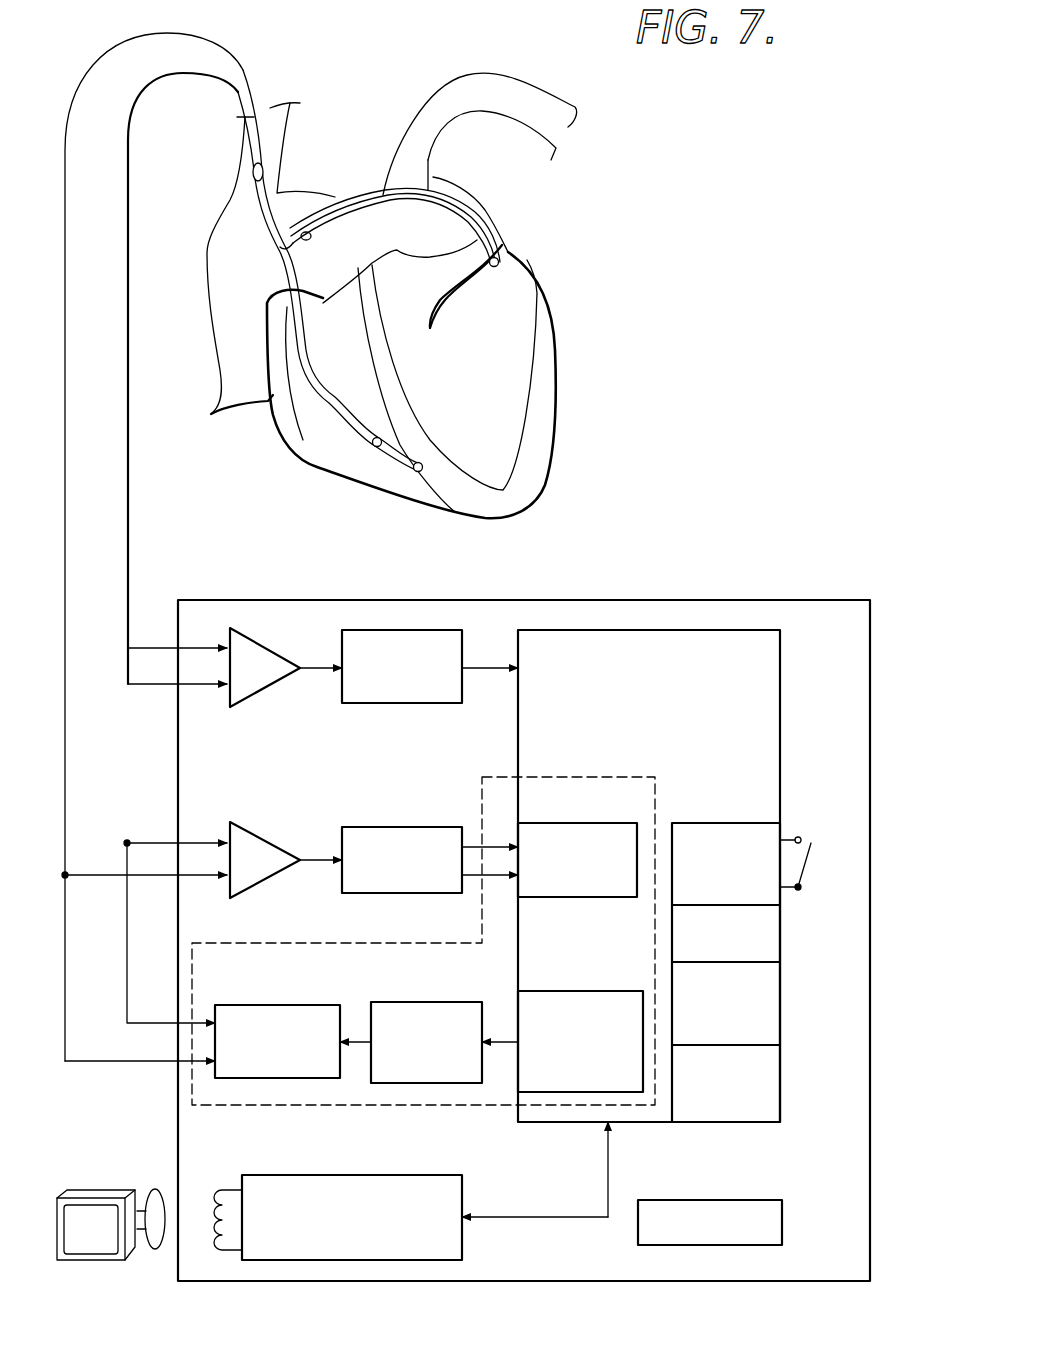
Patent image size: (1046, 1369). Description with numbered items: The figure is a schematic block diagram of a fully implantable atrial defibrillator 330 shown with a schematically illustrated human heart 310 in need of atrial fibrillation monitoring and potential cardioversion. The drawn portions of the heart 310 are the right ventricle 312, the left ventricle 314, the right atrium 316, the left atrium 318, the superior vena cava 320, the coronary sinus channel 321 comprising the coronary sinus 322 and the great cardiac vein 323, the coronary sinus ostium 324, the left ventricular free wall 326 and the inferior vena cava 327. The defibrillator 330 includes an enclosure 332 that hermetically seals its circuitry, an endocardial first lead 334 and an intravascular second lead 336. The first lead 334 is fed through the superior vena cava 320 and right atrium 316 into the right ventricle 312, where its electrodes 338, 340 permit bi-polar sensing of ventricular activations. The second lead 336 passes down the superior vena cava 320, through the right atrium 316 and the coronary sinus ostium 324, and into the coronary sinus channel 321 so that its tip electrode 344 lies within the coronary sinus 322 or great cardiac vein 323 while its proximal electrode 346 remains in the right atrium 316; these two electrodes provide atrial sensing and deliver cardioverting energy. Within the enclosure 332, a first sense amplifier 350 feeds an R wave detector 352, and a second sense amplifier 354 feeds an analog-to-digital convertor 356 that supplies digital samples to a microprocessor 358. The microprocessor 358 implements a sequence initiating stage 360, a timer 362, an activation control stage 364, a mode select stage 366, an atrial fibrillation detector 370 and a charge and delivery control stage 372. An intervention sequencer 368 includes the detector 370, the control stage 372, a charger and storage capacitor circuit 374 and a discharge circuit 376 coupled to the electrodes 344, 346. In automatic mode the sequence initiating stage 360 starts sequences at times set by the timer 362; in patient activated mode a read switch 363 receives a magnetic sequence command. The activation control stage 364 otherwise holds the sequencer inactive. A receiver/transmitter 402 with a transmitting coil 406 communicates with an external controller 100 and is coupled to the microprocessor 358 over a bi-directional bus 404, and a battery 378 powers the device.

The external programmer 100 is at (87, 1197).
The human heart 310 is at (808, 160).
The right ventricle 312 is at (317, 383).
The left ventricle 314 is at (497, 460).
The right atrium 316 is at (236, 233).
The left atrium 318 is at (443, 183).
The superior vena cava 320 is at (288, 130).
The coronary sinus channel 321 is at (402, 177).
The coronary sinus 322 is at (357, 197).
The great cardiac vein 323 is at (503, 240).
The coronary sinus ostium 324 is at (315, 232).
The left ventricular free wall 326 is at (520, 257).
The inferior vena cava 327 is at (240, 364).
The atrial defibrillator 330 is at (807, 537).
The enclosure 332 is at (498, 598).
The endocardial first lead 334 is at (128, 553).
The intravascular second lead 336 is at (65, 517).
The electrode 338 is at (418, 472).
The electrode 340 is at (377, 447).
The first or tip electrode 344 is at (498, 272).
The second or proximal electrode 346 is at (256, 170).
The first sense amplifier 350 is at (277, 647).
The R wave detector 352 is at (403, 704).
The second sense amplifier 354 is at (277, 832).
The analog-to-digital convertor 356 is at (415, 894).
The microprocessor 358 is at (780, 742).
The sequence initiating stage 360 is at (767, 832).
The timer 362 is at (770, 937).
The read switch 363 is at (806, 872).
The activation control stage 364 is at (770, 992).
The mode select stage 366 is at (770, 1075).
The intervention sequencer 368 is at (315, 945).
The atrial fibrillation detector 370 is at (588, 822).
The charge and delivery control stage 372 is at (592, 990).
The charger and storage capacitor circuit 374 is at (413, 1002).
The discharge circuit 376 is at (273, 1005).
The depletable power source 378 is at (712, 1200).
The receiver/transmitter 402 is at (335, 1175).
The bi-directional bus 404 is at (540, 1217).
The transmitting coil 406 is at (222, 1190).